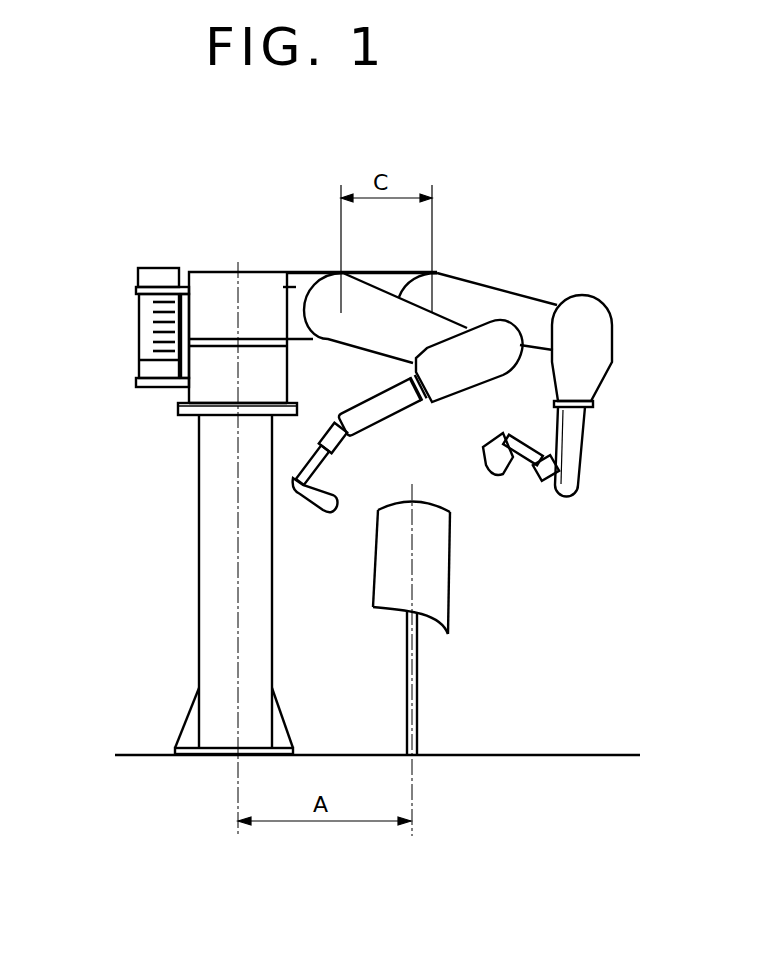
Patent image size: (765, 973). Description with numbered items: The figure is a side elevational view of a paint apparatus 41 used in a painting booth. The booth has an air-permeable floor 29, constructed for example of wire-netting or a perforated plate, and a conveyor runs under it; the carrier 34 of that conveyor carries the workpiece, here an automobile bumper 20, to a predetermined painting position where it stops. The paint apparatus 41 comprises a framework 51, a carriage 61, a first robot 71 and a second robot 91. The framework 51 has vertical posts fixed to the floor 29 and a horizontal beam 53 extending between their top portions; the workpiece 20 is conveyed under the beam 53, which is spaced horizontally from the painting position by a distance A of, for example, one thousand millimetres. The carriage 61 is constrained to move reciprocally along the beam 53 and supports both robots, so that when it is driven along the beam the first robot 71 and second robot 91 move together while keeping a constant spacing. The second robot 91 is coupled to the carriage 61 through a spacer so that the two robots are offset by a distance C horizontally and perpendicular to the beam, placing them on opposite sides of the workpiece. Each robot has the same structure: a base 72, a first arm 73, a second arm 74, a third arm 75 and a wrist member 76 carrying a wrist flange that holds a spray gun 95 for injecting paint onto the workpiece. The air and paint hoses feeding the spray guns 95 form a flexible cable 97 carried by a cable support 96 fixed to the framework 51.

The automobile bumper 20 is at (450, 582).
The floor 29 is at (510, 756).
The carrier 34 is at (417, 687).
The paint apparatus 41 is at (172, 584).
The framework 51 is at (203, 655).
The horizontal beam 53 is at (185, 392).
The carriage 61 is at (207, 275).
The first robot 71 is at (331, 262).
The base 72 is at (262, 272).
The first arm 73 is at (292, 287).
The second arm 74 is at (467, 390).
The third arm 75 is at (362, 398).
The wrist member 76 is at (345, 450).
The second robot 91 is at (515, 280).
The spray gun 95 is at (314, 512).
The cable support 96 is at (155, 387).
The flexible cable 97 is at (140, 313).